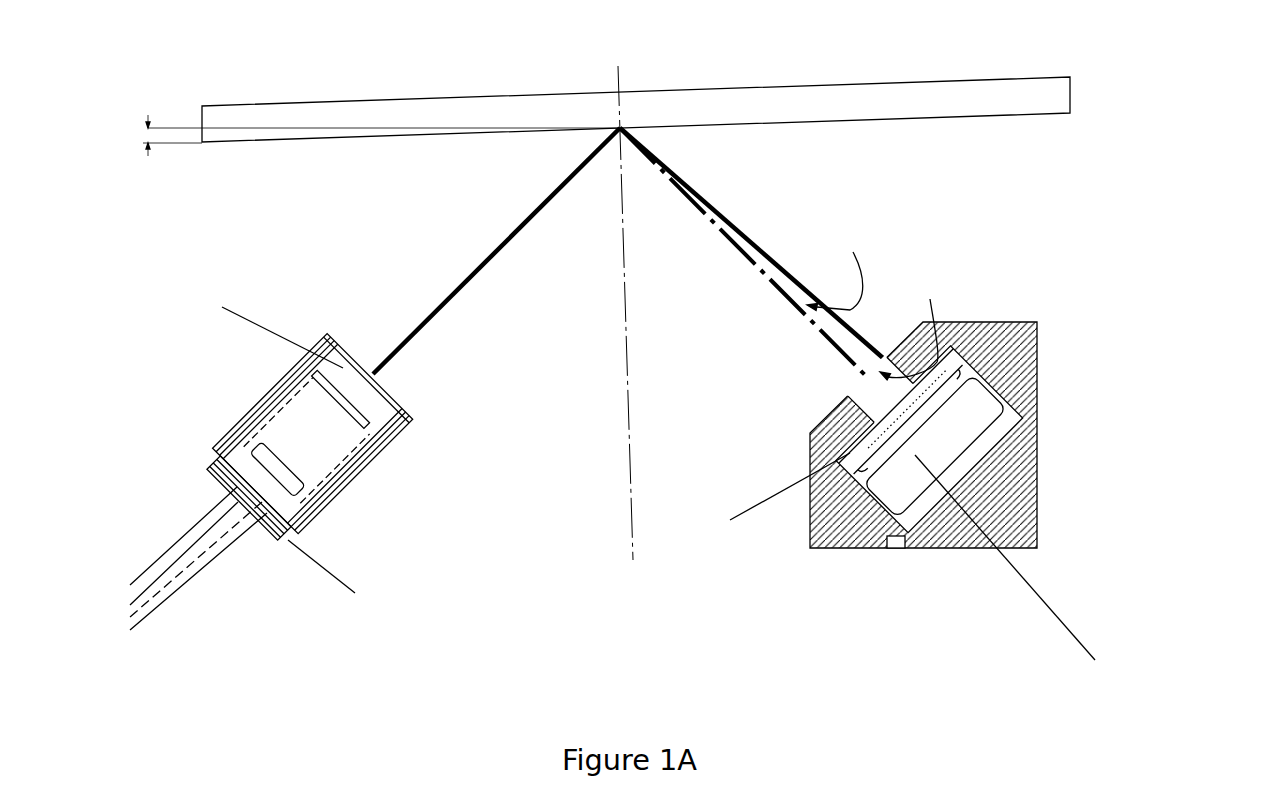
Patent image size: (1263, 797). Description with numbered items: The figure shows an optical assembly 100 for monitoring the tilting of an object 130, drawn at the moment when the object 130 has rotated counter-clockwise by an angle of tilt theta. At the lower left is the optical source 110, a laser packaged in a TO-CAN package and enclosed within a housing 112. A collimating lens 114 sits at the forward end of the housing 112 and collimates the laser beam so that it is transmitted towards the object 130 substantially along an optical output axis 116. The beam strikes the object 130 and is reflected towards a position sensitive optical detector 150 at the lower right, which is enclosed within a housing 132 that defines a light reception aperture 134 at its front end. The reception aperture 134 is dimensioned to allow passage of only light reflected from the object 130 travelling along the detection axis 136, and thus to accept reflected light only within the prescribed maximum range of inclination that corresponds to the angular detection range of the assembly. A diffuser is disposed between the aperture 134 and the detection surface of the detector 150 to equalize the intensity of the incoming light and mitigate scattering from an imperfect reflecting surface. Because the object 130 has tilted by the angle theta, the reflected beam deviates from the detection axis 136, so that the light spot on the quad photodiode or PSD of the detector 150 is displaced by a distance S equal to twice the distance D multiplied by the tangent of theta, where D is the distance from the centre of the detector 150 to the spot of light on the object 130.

The optical assembly 100 is at (649, 396).
The optical source 110 is at (319, 450).
The housing 112 is at (306, 441).
The collimating lens 114 is at (341, 399).
The optical output axis 116 is at (457, 302).
The object 130 is at (928, 68).
The housing 132 is at (1010, 480).
The light reception aperture 134 is at (887, 397).
The detection axis 136 is at (767, 228).
The position sensitive optical detector 150 is at (944, 472).